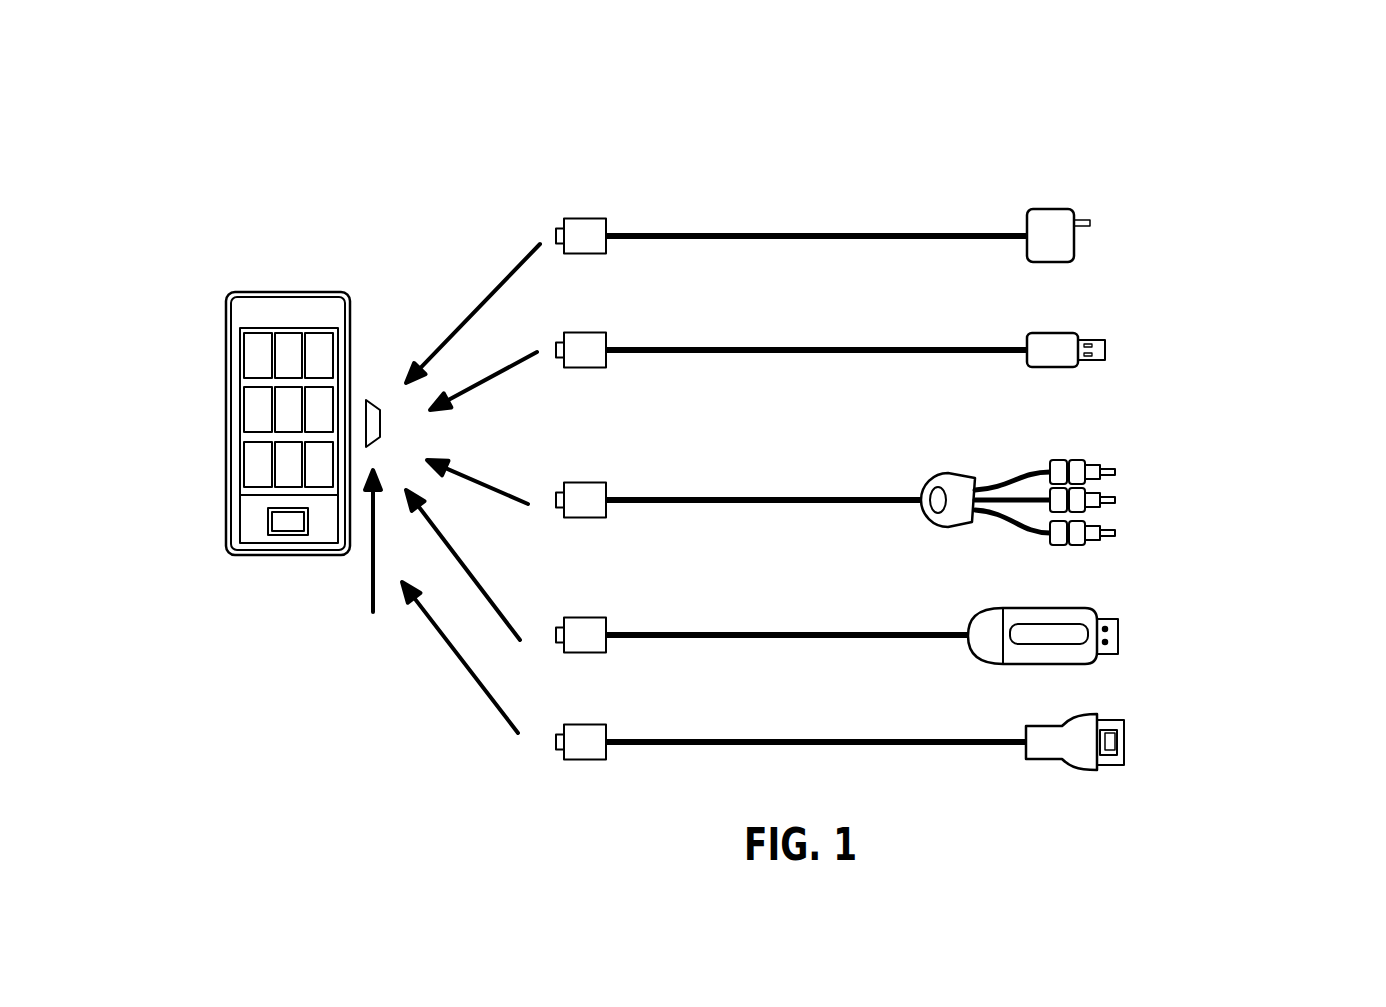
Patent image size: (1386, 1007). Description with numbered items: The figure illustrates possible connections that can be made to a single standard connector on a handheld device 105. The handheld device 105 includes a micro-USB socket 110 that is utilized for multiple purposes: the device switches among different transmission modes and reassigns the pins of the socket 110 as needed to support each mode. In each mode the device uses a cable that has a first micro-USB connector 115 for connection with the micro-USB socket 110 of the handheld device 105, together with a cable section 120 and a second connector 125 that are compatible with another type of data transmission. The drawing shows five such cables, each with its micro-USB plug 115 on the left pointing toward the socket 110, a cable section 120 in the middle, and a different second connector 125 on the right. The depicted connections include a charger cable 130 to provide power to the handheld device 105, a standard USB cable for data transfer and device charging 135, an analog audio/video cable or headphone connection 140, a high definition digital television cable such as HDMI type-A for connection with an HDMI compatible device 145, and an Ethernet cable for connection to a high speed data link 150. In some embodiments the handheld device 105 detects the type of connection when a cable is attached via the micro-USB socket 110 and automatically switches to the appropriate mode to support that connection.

The handheld device 105 is at (284, 287).
The micro-USB socket 110 is at (362, 660).
The first micro-USB connector 115 is at (580, 190).
The cable section 120 is at (794, 185).
The second connector 125 is at (1030, 180).
The charger cable 130 is at (1181, 235).
The standard USB cable 135 is at (1200, 354).
The analog A/V cable or headphone connection 140 is at (1123, 502).
The high definition digital television cable 145 is at (1154, 647).
The Ethernet cable 150 is at (1183, 742).